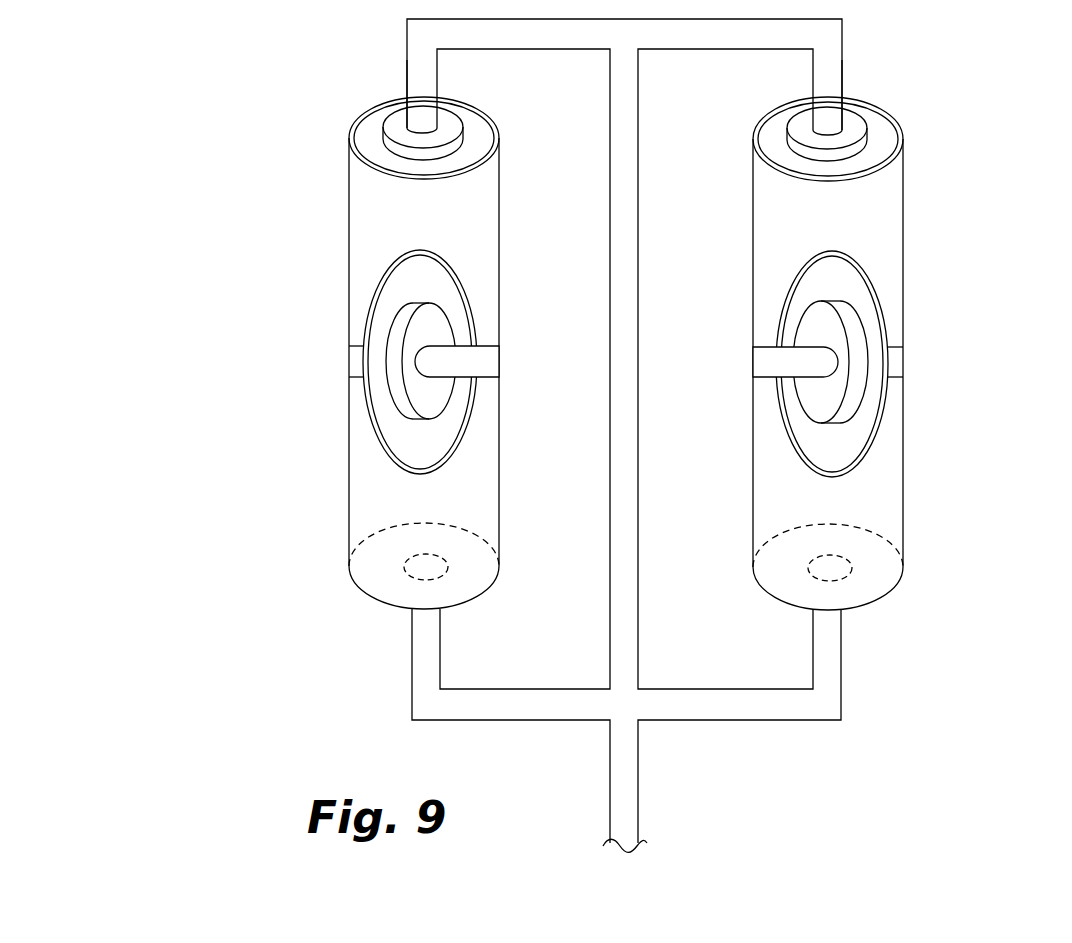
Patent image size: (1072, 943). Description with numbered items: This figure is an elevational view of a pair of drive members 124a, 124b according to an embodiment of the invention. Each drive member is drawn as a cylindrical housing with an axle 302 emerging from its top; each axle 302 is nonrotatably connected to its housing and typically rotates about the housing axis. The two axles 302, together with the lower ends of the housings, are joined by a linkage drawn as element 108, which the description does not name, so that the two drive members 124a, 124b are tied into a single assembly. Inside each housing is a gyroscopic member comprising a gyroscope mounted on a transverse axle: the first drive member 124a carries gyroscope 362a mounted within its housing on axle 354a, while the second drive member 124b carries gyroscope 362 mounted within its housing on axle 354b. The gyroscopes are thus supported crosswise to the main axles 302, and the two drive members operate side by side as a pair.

The manifold / flow distribution line 108 is at (728, 30).
The axle 302 is at (415, 80).
The drive member 124a is at (349, 253).
The drive member 124b is at (903, 260).
The axle 354a is at (482, 365).
The axle 354b is at (903, 362).
The gyroscope 362a is at (405, 405).
The gyroscope 362 is at (827, 400).